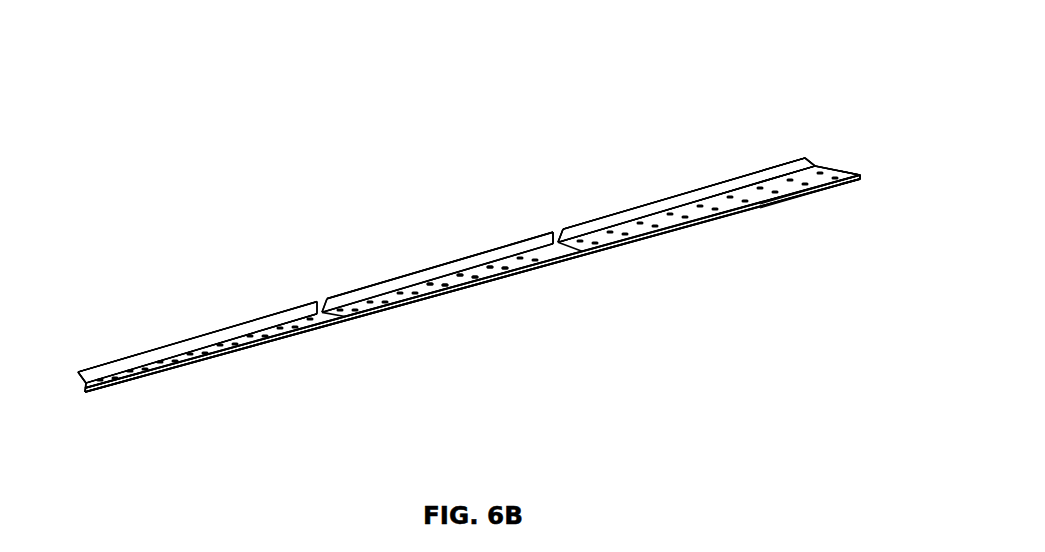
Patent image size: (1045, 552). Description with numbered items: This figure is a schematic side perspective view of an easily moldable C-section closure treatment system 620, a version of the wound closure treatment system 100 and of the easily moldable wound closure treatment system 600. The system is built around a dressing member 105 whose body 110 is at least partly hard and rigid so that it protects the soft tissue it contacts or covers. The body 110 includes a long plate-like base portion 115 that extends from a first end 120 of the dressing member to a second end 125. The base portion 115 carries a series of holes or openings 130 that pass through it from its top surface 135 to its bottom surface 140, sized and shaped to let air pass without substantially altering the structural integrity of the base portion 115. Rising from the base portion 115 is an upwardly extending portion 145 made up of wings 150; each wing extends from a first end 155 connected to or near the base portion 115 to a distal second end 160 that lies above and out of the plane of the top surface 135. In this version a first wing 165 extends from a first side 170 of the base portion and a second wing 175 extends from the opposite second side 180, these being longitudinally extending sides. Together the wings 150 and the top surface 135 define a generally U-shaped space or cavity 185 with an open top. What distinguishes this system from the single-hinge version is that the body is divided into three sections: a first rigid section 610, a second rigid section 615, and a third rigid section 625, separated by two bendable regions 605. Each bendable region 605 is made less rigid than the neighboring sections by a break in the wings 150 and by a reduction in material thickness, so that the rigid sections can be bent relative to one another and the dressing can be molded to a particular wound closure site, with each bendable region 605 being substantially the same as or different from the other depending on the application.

The wound closure treatment system 100 is at (731, 54).
The dressing member 105 is at (787, 76).
The body 110 is at (855, 88).
The base portion 115 is at (740, 196).
The first end 120 is at (118, 330).
The second end 125 is at (774, 145).
The holes or openings 130 is at (285, 333).
The top surface 135 is at (473, 276).
The bottom surface 140 is at (108, 397).
The upwardly extending portion 145 is at (72, 387).
The wings 150 is at (261, 320).
The first end of wing 155 is at (548, 236).
The second end of wing 160 is at (513, 243).
The first wing 165 is at (803, 158).
The first side 170 is at (856, 121).
The second wing 175 is at (861, 178).
The second side 180 is at (873, 169).
The space or cavity 185 is at (847, 164).
The easily moldable wound closure treatment system 600 is at (254, 223).
The bendable region 605 is at (566, 224).
The first rigid section 610 is at (203, 313).
The second rigid section 615 is at (406, 259).
The easily moldable C-section closure treatment system 620 is at (340, 188).
The third rigid section 625 is at (670, 187).